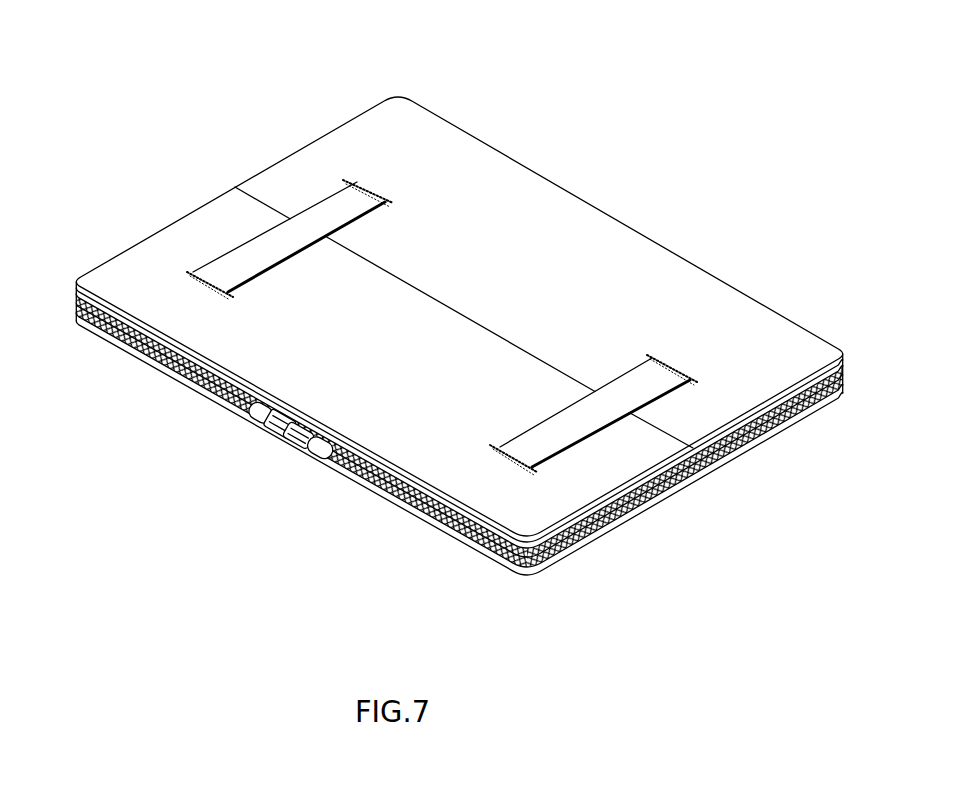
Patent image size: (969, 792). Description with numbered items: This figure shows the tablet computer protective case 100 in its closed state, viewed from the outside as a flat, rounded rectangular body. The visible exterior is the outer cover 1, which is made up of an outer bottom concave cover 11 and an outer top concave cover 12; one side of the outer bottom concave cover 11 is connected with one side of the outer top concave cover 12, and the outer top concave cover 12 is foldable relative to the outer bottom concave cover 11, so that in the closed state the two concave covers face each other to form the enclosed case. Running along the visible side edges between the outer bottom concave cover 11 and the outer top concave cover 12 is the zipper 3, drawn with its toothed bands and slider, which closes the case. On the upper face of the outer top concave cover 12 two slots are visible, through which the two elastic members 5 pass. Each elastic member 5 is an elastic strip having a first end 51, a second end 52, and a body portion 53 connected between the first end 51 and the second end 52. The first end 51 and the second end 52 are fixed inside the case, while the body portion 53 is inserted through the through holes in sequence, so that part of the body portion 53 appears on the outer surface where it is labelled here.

The tablet computer protective case 100 is at (433, 323).
The outer cover 1 is at (433, 320).
The outer bottom concave cover 11 is at (415, 508).
The outer top concave cover 12 is at (687, 300).
The zipper 3 is at (117, 326).
The elastic member 5 is at (395, 338).
The first end 51 is at (352, 180).
The second end 52 is at (197, 272).
The body portion 53 is at (323, 213).